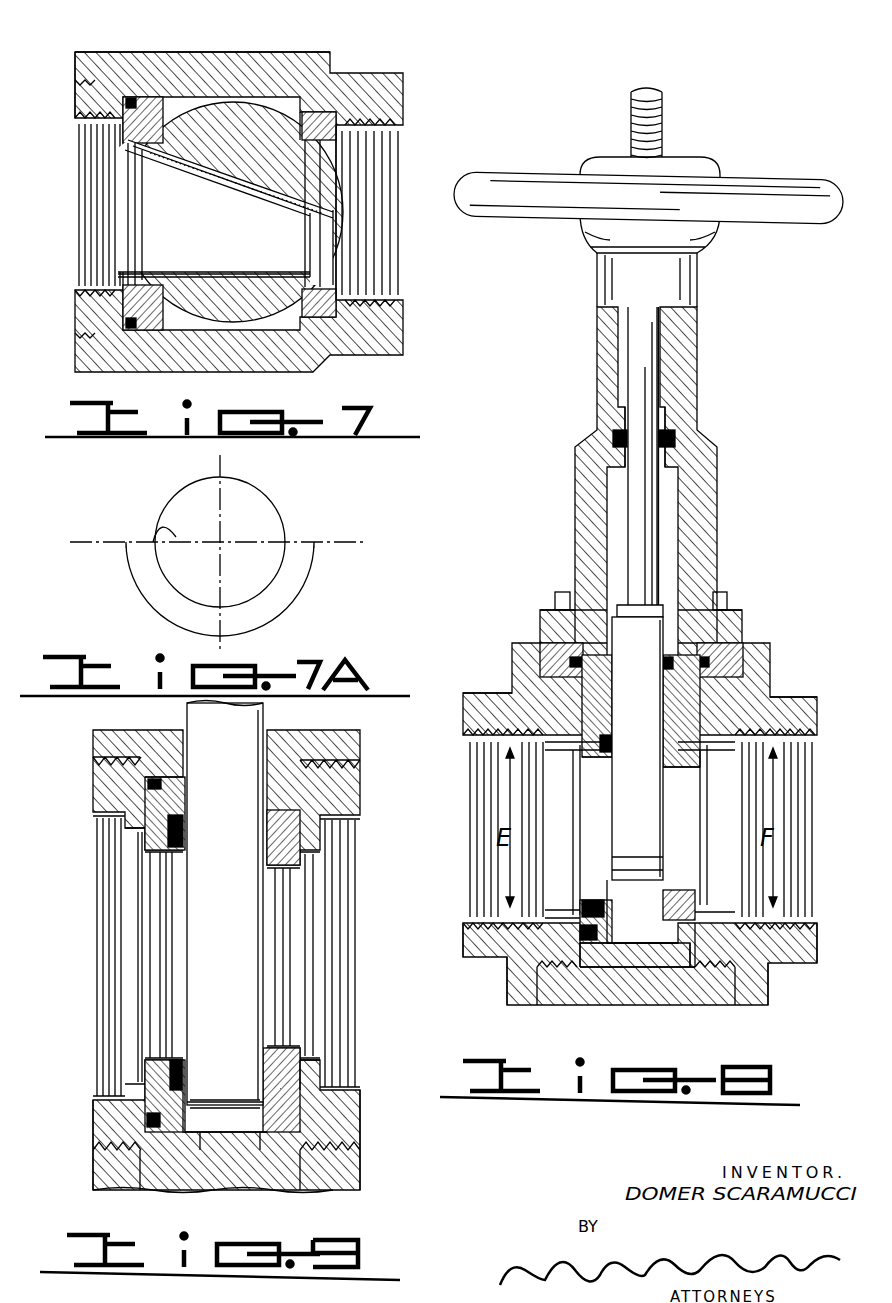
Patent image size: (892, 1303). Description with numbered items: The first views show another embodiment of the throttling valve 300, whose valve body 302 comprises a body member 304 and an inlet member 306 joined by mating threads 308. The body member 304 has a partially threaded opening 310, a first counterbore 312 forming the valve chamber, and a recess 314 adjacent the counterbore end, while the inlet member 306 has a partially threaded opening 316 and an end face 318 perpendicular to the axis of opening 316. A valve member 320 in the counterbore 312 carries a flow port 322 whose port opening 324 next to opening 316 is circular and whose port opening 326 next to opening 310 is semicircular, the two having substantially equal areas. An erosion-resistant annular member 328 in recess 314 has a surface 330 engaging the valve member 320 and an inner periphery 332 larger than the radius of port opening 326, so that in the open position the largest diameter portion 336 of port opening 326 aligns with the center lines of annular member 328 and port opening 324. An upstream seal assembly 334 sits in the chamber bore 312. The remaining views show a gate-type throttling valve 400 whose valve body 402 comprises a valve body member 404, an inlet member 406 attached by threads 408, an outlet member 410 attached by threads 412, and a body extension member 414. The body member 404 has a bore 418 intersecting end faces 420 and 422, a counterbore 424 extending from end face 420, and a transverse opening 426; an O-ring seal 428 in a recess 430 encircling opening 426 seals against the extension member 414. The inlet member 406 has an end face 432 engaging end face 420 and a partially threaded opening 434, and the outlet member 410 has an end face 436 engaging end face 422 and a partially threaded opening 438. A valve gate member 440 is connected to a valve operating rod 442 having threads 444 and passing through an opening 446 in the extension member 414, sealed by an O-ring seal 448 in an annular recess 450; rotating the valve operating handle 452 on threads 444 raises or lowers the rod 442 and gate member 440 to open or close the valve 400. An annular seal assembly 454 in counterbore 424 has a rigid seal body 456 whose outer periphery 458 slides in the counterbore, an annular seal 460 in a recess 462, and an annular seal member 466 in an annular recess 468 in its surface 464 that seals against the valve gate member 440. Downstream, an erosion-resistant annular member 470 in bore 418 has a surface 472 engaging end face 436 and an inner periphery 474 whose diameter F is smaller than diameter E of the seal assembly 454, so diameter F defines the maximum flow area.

In FIG. 7, the throttling valve 300 is at (252, 38).
In FIG. 7, the valve body 302 is at (118, 52).
In FIG. 7, the body member 304 is at (100, 52).
In FIG. 7, the inlet member 306 is at (85, 103).
In FIG. 7, the mating threads 308 is at (88, 78).
In FIG. 7, the partially threaded opening 310 is at (380, 272).
In FIG. 7, the first counterbore 312 is at (272, 324).
In FIG. 7, the recess 314 is at (300, 318).
In FIG. 7, the opening 316 is at (80, 172).
In FIG. 8, the opening 316 is at (722, 595).
In FIG. 7, the end face 318 is at (115, 307).
In FIG. 7, the valve member 320 is at (210, 178).
In FIG. 7, the flow port 322 is at (268, 258).
In FIG. 7, the port opening 324 is at (135, 208).
In FIG. 7A, the port opening 324 is at (270, 505).
In FIG. 7, the port opening 326 is at (322, 242).
In FIG. 7A, the port opening 326 is at (292, 588).
In FIG. 7, the annular member 328 is at (308, 118).
In FIG. 7, the surface 330 is at (300, 135).
In FIG. 7, the inner periphery 332 is at (355, 165).
In FIG. 7, the upstream seal assembly 334 is at (85, 332).
In FIG. 7A, the largest diameter portion 336 is at (165, 523).
In FIG. 9, the gate valve 400 is at (172, 721).
In FIG. 8, the gate valve 400 is at (728, 146).
In FIG. 8, the valve body 402 is at (772, 660).
In FIG. 9, the valve body member 404 is at (215, 1190).
In FIG. 8, the valve body member 404 is at (592, 1008).
In FIG. 9, the inlet member 406 is at (95, 1136).
In FIG. 8, the inlet member 406 is at (487, 955).
In FIG. 9, the threads 408 is at (352, 1125).
In FIG. 8, the threads 408 is at (548, 1005).
In FIG. 8, the outlet member 410 is at (790, 963).
In FIG. 8, the threads 412 is at (710, 1005).
In FIG. 8, the body extension member 414 is at (712, 522).
In FIG. 9, the bore 418 is at (285, 1125).
In FIG. 8, the bore 418 is at (680, 980).
In FIG. 8, the end face 420 is at (592, 955).
In FIG. 8, the end face 422 is at (695, 960).
In FIG. 9, the counterbore 424 is at (212, 1127).
In FIG. 8, the counterbore 424 is at (625, 944).
In FIG. 9, the opening 426 is at (290, 740).
In FIG. 8, the opening 426 is at (690, 722).
In FIG. 8, the O-ring seal 428 is at (725, 643).
In FIG. 8, the recess 430 is at (547, 640).
In FIG. 9, the end face 432 is at (140, 1100).
In FIG. 8, the end face 432 is at (600, 700).
In FIG. 9, the threaded inlet port 434 is at (92, 915).
In FIG. 8, the threaded inlet port 434 is at (480, 762).
In FIG. 9, the end face 436 is at (283, 837).
In FIG. 8, the end face 436 is at (695, 688).
In FIG. 9, the partially threaded opening 438 is at (352, 905).
In FIG. 8, the partially threaded opening 438 is at (795, 812).
In FIG. 9, the valve gate member 440 is at (238, 758).
In FIG. 8, the valve gate member 440 is at (653, 745).
In FIG. 8, the valve operating rod 442 is at (650, 497).
In FIG. 8, the threads 444 is at (665, 108).
In FIG. 8, the opening 446 is at (672, 477).
In FIG. 8, the O-ring seal 448 is at (590, 446).
In FIG. 8, the annular recess 450 is at (612, 432).
In FIG. 8, the valve operating handle 452 is at (800, 207).
In FIG. 9, the annular seal assembly 454 is at (183, 1060).
In FIG. 8, the annular seal assembly 454 is at (590, 768).
In FIG. 8, the seal body 456 is at (590, 900).
In FIG. 8, the outer periphery 458 is at (605, 935).
In FIG. 9, the annular seal 460 is at (160, 1128).
In FIG. 8, the annular seal 460 is at (580, 950).
In FIG. 8, the recess 462 is at (580, 925).
In FIG. 8, the surface 464 is at (605, 915).
In FIG. 9, the annular seal member 466 is at (186, 1078).
In FIG. 8, the annular seal member 466 is at (605, 826).
In FIG. 8, the annular recess 468 is at (600, 808).
In FIG. 9, the annular member 470 is at (330, 1056).
In FIG. 8, the annular member 470 is at (682, 785).
In FIG. 8, the surface 472 is at (710, 760).
In FIG. 9, the inner periphery 474 is at (300, 1050).
In FIG. 8, the inner periphery 474 is at (680, 878).